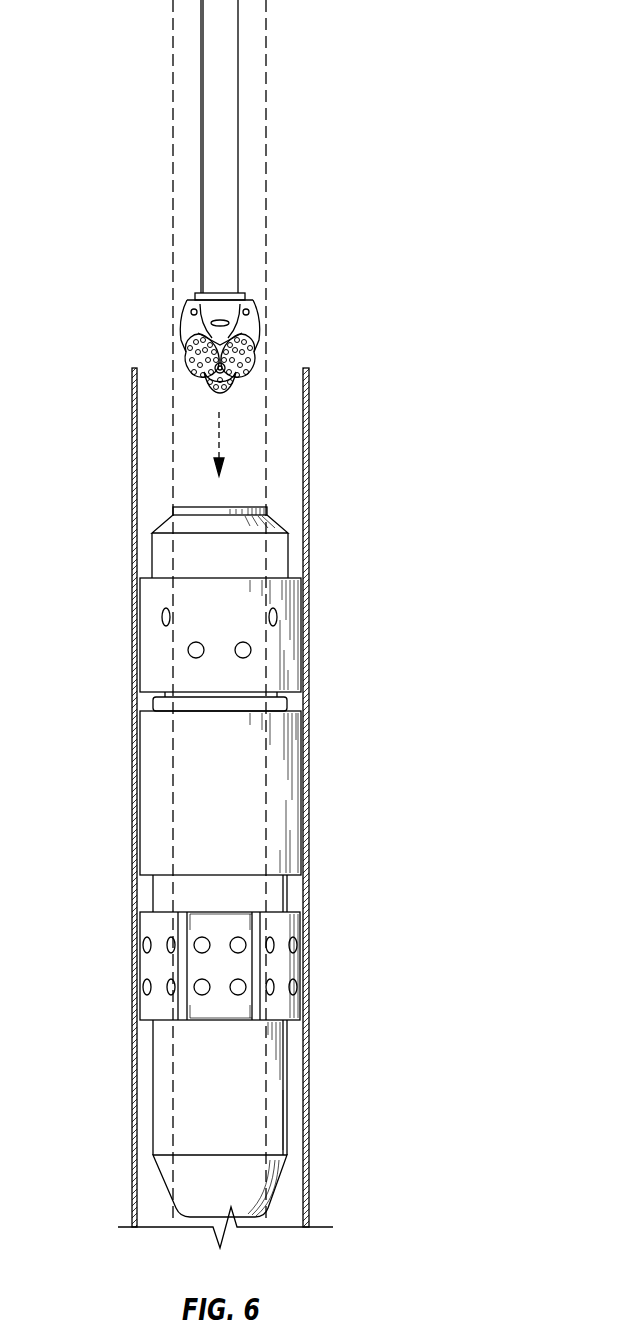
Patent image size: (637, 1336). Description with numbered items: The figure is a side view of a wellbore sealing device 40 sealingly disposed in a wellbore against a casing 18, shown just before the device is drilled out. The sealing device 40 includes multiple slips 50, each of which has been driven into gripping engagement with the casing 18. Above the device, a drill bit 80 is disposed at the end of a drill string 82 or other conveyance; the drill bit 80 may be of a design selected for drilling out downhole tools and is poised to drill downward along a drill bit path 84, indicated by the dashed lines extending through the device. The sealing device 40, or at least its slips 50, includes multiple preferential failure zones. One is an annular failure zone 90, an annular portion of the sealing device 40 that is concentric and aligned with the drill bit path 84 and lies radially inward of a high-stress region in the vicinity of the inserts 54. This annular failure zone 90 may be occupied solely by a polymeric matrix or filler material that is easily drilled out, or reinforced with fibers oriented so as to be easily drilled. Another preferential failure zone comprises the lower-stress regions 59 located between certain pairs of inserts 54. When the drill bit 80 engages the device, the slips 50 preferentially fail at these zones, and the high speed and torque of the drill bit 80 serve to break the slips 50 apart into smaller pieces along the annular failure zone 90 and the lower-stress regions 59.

The casing 18 is at (303, 483).
The wellbore sealing device 40 is at (340, 845).
The slips 50 is at (296, 923).
The inserts 54 is at (251, 650).
The lower-stress regions 59 is at (192, 960).
The drill bit 80 is at (258, 336).
The drill string 82 is at (239, 162).
The drill bit path 84 is at (267, 70).
The annular failure zone 90 is at (267, 1087).